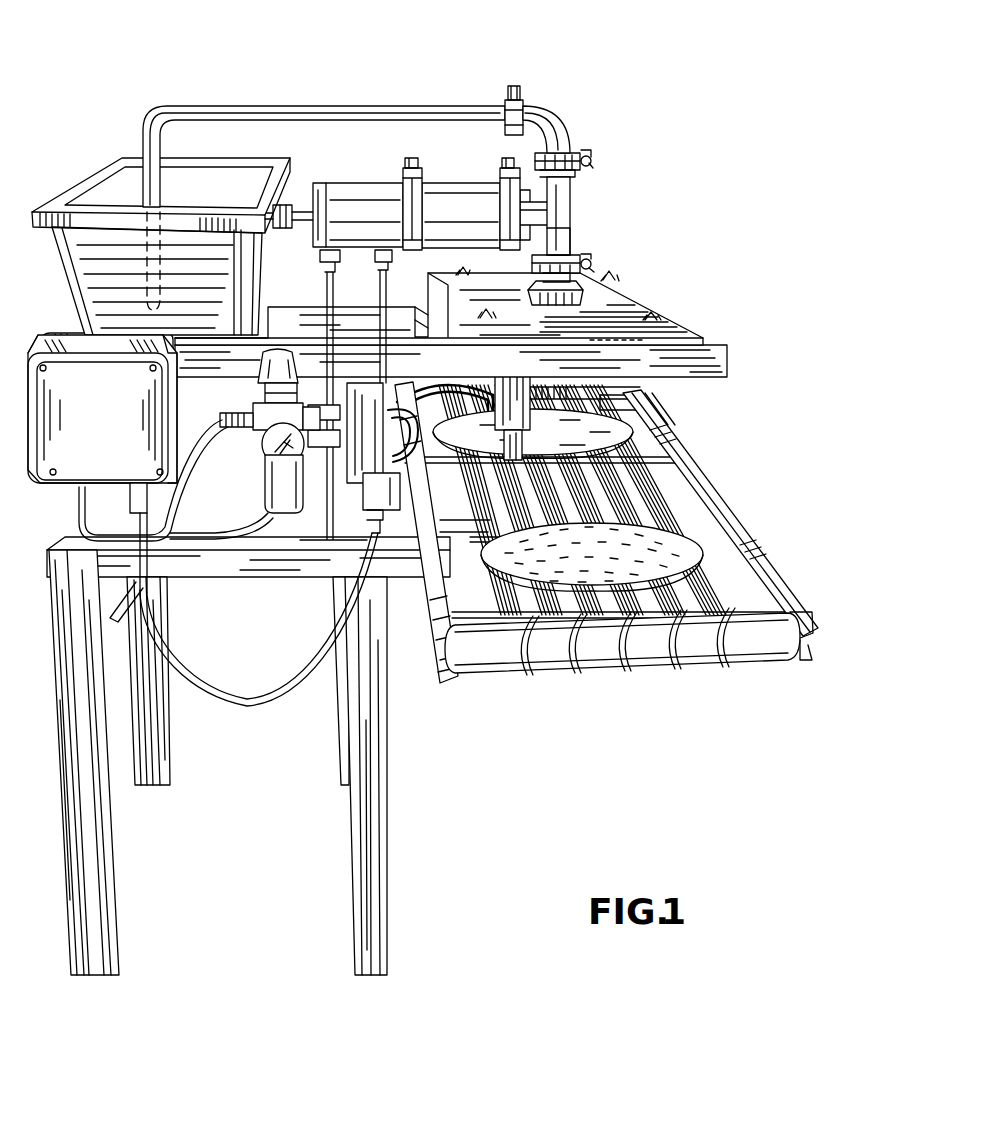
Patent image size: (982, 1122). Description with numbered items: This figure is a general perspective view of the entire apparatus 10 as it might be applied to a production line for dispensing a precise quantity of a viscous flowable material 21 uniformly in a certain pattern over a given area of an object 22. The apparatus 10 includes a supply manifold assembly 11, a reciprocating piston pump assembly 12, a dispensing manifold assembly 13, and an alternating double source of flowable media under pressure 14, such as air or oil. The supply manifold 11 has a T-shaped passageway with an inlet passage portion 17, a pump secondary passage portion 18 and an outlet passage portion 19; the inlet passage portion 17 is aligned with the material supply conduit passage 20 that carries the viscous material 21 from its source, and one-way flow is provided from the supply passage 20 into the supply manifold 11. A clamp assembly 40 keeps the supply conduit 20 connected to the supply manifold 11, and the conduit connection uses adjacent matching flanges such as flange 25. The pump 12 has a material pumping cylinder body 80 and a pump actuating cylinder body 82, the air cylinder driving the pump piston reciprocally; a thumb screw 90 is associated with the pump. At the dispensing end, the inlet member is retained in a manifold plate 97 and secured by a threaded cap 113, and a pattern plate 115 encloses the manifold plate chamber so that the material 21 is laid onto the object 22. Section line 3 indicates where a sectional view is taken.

The section line 3- 3 is at (297, 237).
The apparatus 10 is at (752, 286).
The supply manifold assembly 11 is at (584, 211).
The reciprocating piston pump assembly 12 is at (438, 183).
The dispensing manifold assembly 13 is at (708, 333).
The alternating double source of flowable media under pressure 14 is at (328, 318).
The inlet passage portion 17 is at (566, 183).
The pump secondary passage portion 18 is at (549, 122).
The outlet passage portion 19 is at (571, 240).
The material supply conduit passage 20 is at (290, 106).
The viscous flowable material 21 is at (130, 193).
The object 22 is at (613, 445).
The flange 25 is at (487, 313).
The clamp assembly 40 is at (408, 162).
The material pumping cylinder body 80 is at (457, 197).
The pump actuating cylinder body 82 is at (358, 192).
The thumb screw 90 is at (301, 228).
The manifold plate 97 is at (695, 335).
The cap 113 is at (652, 293).
The pattern plate 115 is at (643, 408).